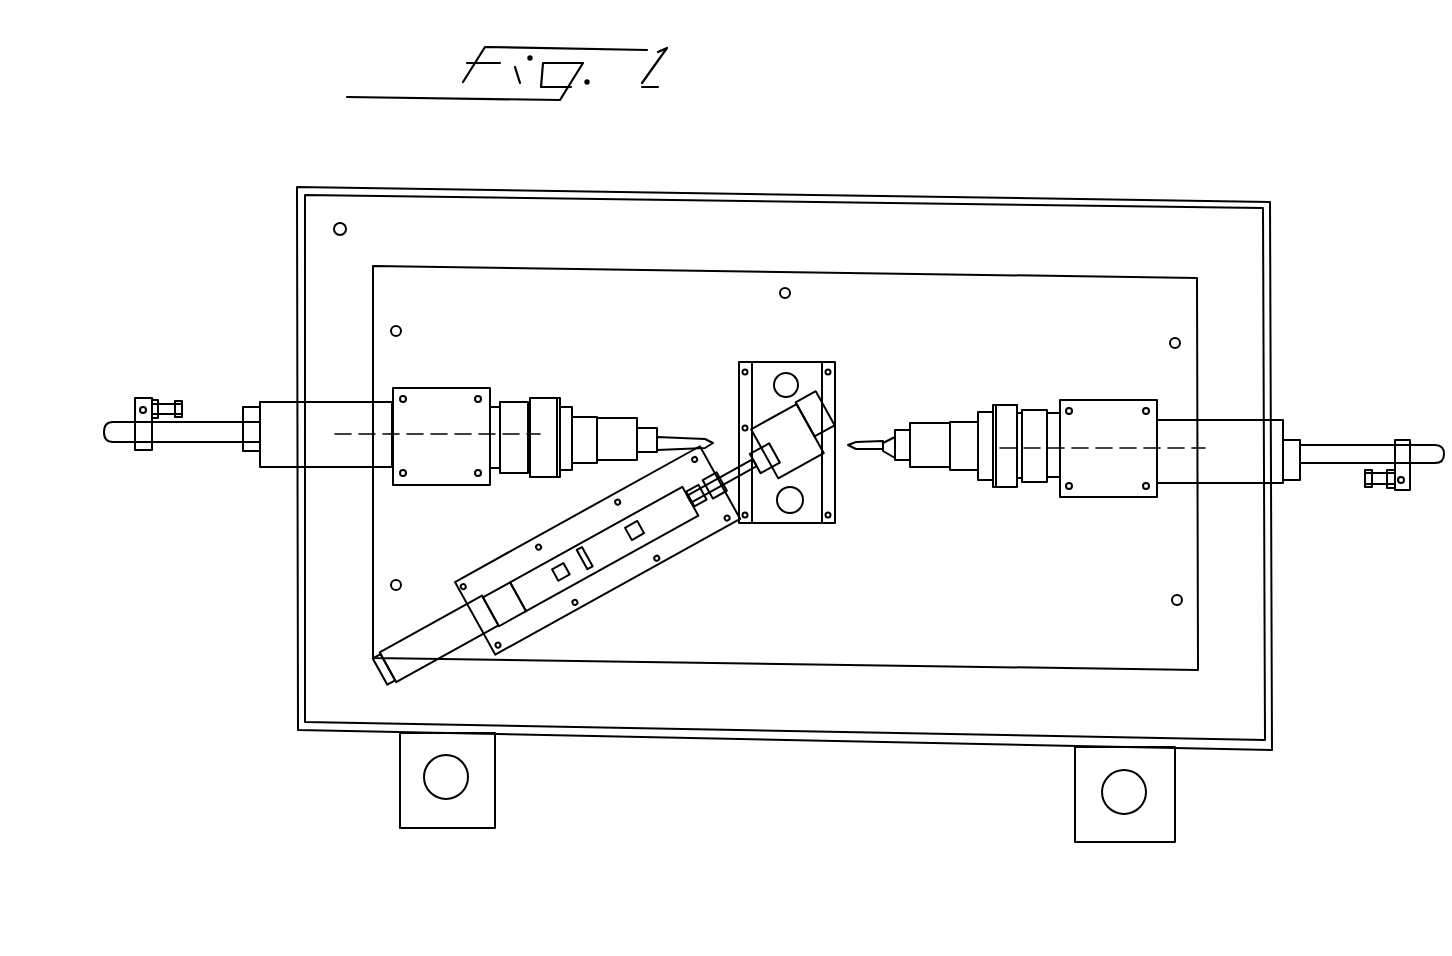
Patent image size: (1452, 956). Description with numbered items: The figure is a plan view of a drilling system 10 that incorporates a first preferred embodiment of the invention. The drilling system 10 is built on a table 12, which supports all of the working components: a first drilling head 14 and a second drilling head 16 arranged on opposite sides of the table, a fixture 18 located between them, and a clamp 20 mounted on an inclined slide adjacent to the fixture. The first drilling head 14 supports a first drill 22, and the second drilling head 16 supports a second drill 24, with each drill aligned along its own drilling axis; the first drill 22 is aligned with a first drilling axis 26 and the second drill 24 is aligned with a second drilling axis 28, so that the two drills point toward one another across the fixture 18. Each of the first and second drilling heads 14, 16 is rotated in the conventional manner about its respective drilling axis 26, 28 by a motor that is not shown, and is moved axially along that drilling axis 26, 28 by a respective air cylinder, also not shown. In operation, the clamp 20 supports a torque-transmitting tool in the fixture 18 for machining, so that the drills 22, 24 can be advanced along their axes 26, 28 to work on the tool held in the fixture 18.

The drilling system 10 is at (804, 812).
The table 12 is at (1060, 303).
The first drilling head 14 is at (618, 427).
The second drilling head 16 is at (927, 457).
The fixture 18 is at (805, 392).
The clamp 20 is at (662, 522).
The first drill 22 is at (685, 438).
The second drill 24 is at (867, 440).
The first drilling axis 26 is at (430, 433).
The second drilling axis 28 is at (1080, 447).